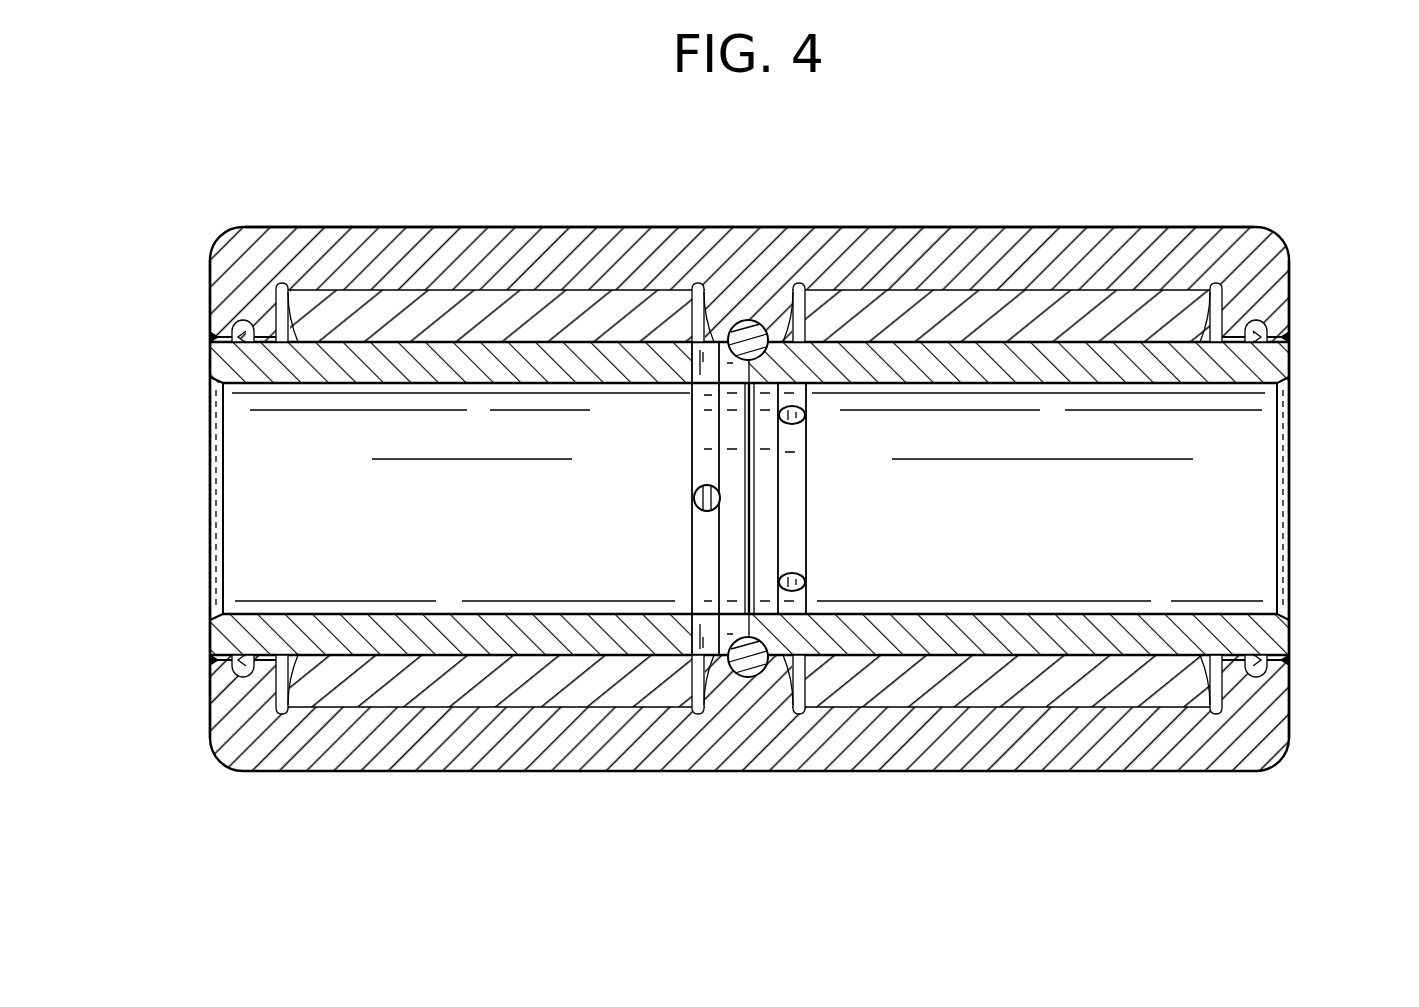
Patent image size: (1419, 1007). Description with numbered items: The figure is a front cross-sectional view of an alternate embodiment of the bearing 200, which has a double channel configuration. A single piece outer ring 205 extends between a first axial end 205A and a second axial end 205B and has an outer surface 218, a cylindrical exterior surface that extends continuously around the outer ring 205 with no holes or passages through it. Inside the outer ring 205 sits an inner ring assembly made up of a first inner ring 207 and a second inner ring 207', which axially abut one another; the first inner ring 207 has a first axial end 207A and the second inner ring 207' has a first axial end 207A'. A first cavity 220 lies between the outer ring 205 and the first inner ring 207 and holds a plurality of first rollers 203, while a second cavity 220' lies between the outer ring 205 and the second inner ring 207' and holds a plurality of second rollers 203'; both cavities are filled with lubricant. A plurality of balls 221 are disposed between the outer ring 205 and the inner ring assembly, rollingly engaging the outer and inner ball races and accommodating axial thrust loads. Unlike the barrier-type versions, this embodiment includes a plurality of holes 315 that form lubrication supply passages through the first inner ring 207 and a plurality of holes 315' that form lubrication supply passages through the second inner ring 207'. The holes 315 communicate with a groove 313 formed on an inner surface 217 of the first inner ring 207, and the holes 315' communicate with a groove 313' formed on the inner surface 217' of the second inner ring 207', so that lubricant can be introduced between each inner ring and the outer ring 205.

The bearing 200 is at (978, 200).
The first rollers 203 is at (491, 437).
The second rollers 203' is at (1007, 414).
The outer ring 205 is at (1145, 255).
The first axial end 205A is at (210, 290).
The second axial end 205B is at (1289, 270).
The first inner ring 207 is at (749, 412).
The second inner ring 207' is at (1018, 390).
The first axial end 207A is at (168, 489).
The first axial end 207A' is at (1347, 476).
The inner surface 217 is at (461, 492).
The inner surface 217' is at (1098, 493).
The outer surface 218 is at (1027, 227).
The first cavity 220 is at (710, 441).
The second cavity 220' is at (851, 450).
The balls 221 is at (748, 668).
The groove 313 is at (673, 498).
The groove 313' is at (847, 498).
The holes 315 is at (666, 487).
The holes 315' is at (847, 498).